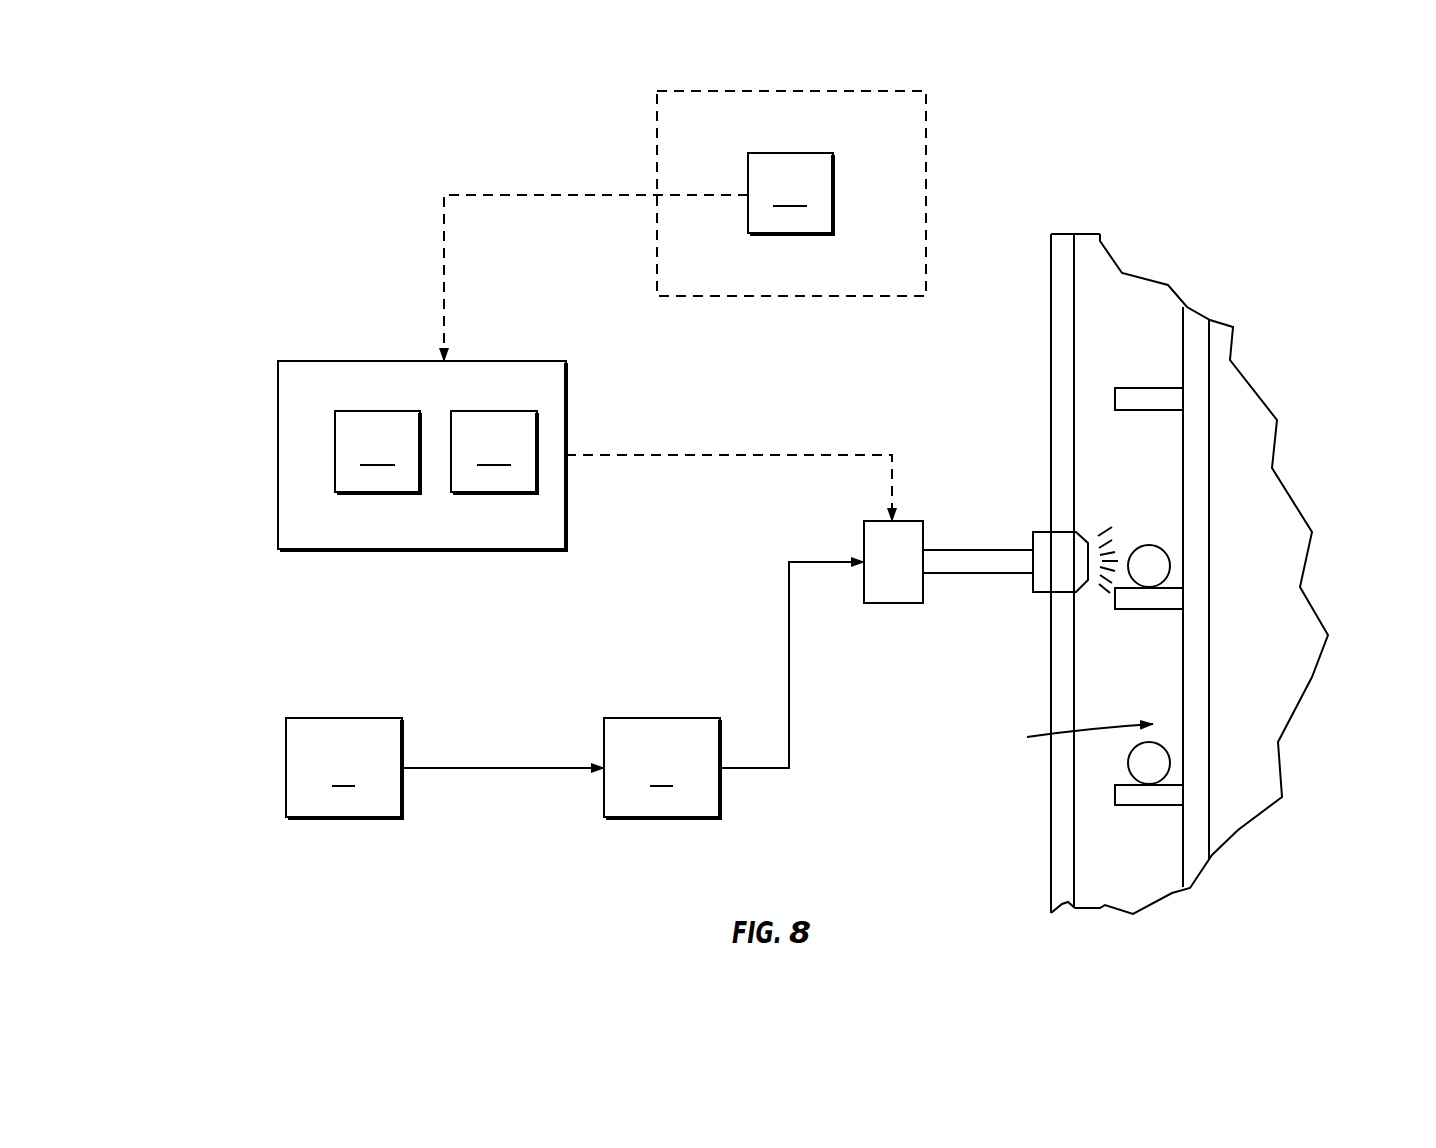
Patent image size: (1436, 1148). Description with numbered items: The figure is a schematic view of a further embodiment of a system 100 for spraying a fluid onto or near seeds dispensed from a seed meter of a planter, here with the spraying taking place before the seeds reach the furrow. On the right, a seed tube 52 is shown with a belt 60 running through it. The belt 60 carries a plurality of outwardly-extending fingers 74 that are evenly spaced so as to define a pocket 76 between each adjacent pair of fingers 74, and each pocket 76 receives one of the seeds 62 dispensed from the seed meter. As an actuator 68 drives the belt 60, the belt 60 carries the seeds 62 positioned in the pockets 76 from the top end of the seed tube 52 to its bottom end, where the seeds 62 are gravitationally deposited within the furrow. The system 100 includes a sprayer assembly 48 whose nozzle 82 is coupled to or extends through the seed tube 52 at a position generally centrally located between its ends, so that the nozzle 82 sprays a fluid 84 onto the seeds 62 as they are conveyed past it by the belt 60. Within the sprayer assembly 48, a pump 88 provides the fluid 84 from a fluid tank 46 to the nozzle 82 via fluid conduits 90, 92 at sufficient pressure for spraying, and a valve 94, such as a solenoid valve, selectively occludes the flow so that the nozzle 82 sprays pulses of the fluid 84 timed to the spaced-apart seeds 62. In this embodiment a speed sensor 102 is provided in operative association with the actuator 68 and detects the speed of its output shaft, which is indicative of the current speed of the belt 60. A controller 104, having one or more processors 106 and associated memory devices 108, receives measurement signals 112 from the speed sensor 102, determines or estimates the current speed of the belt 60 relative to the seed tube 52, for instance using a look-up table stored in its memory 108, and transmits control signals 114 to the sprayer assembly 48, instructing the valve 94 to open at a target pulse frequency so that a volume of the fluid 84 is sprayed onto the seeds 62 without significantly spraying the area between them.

The system 100 is at (317, 200).
The actuator 68 is at (814, 91).
The speed sensor 102 is at (790, 193).
The measurement signals 112 is at (580, 186).
The controller 104 is at (350, 360).
The processor 106 is at (377, 452).
The memory device 108 is at (494, 452).
The control signals 114 is at (721, 455).
The sprayer assembly 48 is at (288, 680).
The fluid tank 46 is at (344, 768).
The fluid conduit 90 is at (491, 768).
The pump 88 is at (662, 768).
The fluid conduit 92 is at (789, 702).
The valve 94 is at (897, 604).
The nozzle 82 is at (1043, 530).
The fluid 84 is at (1107, 528).
The seed tube 52 is at (1050, 317).
The belt 60 is at (1198, 393).
The finger 74 is at (1148, 388).
The seed 62 is at (1158, 563).
The pocket 76 is at (1075, 736).